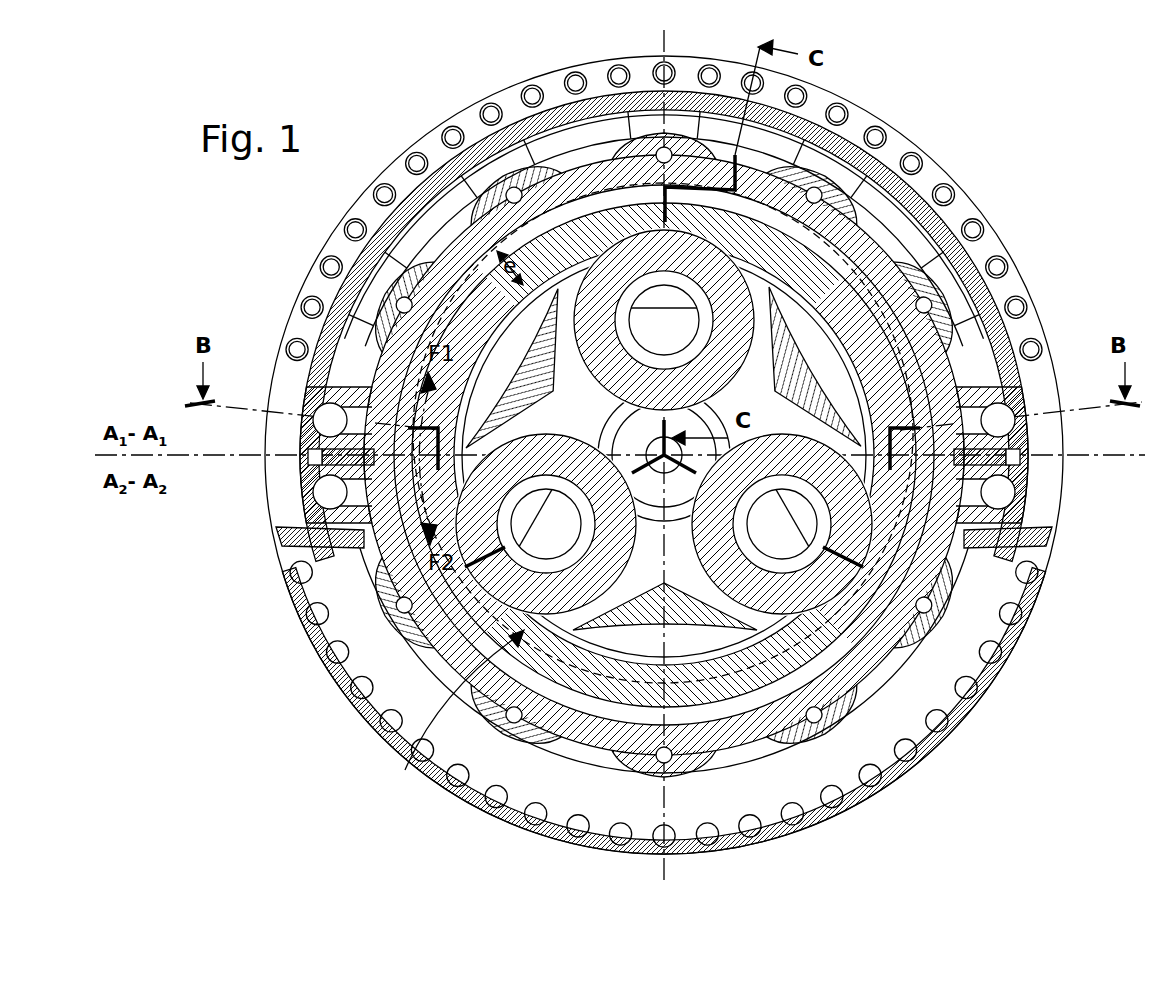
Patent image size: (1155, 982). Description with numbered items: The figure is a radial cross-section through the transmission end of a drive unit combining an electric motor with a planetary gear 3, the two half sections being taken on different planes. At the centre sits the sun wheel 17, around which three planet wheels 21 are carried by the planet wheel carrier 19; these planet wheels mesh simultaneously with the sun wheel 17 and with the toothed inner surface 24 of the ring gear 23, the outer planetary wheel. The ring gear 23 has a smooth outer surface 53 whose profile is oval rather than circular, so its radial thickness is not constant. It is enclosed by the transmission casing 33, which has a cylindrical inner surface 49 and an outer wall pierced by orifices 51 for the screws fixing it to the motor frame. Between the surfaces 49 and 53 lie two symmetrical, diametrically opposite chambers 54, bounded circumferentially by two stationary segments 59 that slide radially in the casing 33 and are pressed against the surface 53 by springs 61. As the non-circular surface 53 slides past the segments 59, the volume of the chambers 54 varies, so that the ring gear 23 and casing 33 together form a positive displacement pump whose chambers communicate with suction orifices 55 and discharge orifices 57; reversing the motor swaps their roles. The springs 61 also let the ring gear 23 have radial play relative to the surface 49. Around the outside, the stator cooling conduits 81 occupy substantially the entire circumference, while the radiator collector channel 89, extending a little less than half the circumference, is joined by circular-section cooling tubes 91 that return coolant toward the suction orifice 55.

The planetary gear 3 is at (420, 758).
The central sun wheel 17 is at (657, 500).
The planet wheel carrier 19 is at (620, 690).
The planet wheels 21 is at (368, 698).
The ring gear 23 is at (592, 700).
The toothed inner surface 24 is at (500, 720).
The transmission casing 33 is at (918, 226).
The cylindrical inner surface 49 is at (556, 200).
The orifices 51 is at (975, 300).
The smooth outer surface 53 is at (604, 210).
The chambers 54 is at (480, 262).
The suction orifices 55 is at (316, 412).
The discharge orifices 57 is at (315, 498).
The stationary segments 59 is at (305, 454).
The springs 61 is at (1020, 455).
The cooling conduits 81 is at (808, 160).
The collector channel 89 is at (838, 755).
The cooling tubes 91 is at (352, 225).